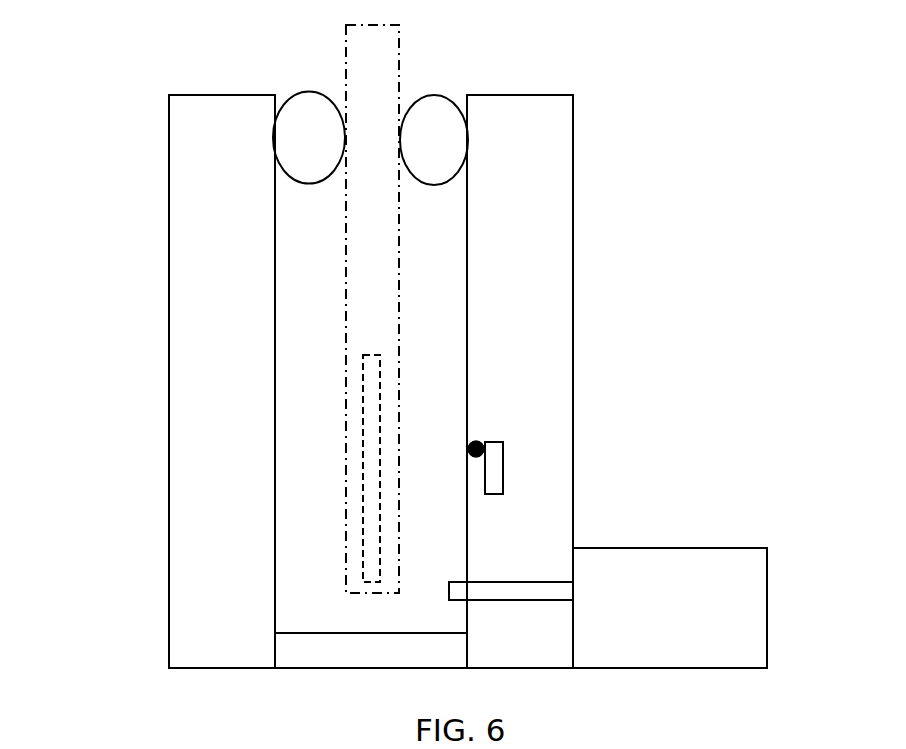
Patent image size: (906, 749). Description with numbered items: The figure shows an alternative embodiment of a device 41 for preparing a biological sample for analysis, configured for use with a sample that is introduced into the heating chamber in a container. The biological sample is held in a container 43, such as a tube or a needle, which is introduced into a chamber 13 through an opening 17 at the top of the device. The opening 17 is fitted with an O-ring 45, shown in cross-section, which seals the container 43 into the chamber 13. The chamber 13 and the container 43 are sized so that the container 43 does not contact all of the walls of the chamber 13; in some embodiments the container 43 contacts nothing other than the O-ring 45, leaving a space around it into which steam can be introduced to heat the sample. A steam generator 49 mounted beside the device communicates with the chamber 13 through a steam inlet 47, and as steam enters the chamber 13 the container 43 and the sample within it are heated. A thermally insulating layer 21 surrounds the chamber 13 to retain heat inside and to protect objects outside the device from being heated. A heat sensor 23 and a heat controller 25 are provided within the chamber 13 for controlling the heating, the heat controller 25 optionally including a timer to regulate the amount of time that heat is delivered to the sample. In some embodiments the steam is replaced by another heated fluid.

The chamber 13 is at (450, 286).
The opening 17 is at (313, 61).
The thermally insulating layer 21 is at (222, 388).
The heat sensor 23 is at (490, 437).
The heat controller 25 is at (505, 474).
The device 41 is at (697, 60).
The container 43 is at (380, 56).
The O-ring 45 is at (433, 110).
The steam inlet 47 is at (505, 579).
The steam generator 49 is at (661, 581).